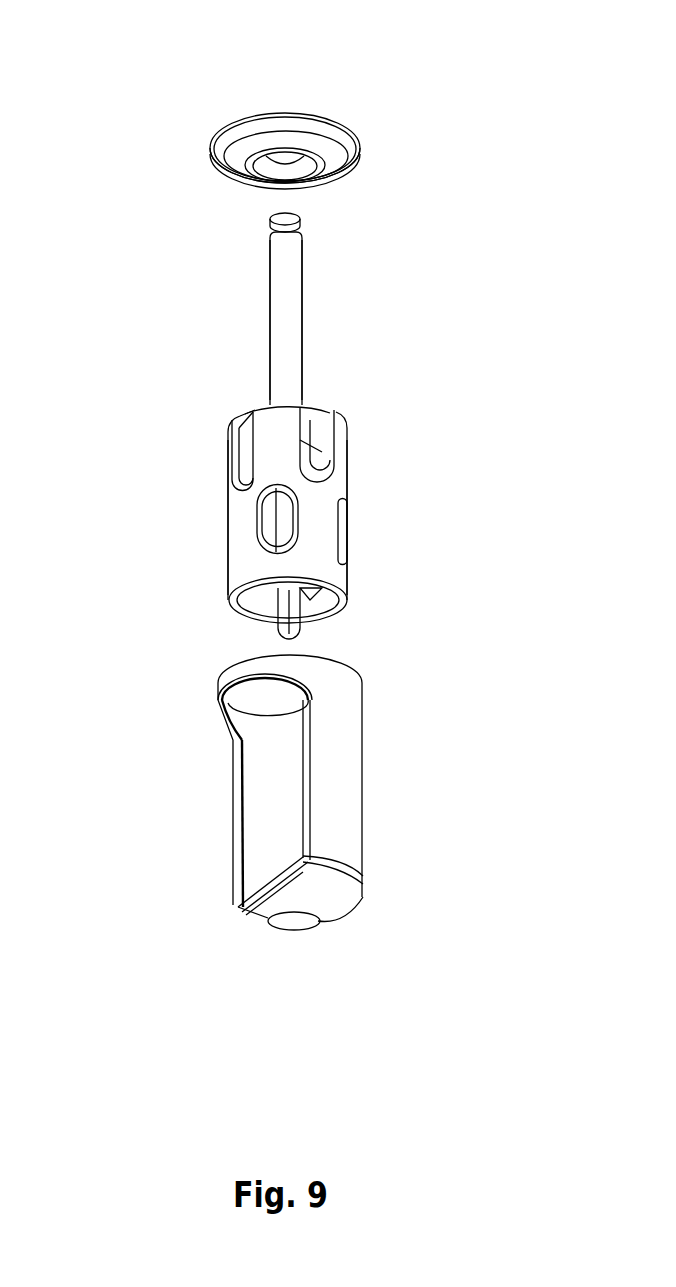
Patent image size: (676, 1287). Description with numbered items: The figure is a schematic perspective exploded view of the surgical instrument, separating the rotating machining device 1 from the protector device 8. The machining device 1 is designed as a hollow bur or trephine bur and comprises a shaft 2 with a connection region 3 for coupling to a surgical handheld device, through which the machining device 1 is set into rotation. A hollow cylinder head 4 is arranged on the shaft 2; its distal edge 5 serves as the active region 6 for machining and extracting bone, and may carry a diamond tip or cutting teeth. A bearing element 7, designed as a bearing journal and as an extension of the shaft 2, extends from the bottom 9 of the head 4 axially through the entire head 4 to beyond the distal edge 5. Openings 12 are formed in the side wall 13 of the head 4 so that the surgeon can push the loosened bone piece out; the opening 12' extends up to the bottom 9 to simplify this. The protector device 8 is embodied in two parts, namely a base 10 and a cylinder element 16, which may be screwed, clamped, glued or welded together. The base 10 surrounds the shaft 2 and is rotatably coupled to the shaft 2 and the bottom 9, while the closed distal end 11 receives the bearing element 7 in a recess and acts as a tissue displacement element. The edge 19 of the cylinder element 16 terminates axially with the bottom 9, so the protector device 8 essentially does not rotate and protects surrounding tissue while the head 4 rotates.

The machining device 1 is at (285, 300).
The shaft 2 is at (283, 342).
The connection region 3 is at (297, 232).
The head 4 is at (337, 482).
The distal edge 5 is at (235, 597).
The active region 6 is at (238, 618).
The bearing element 7 is at (285, 610).
The protector device 8 is at (250, 112).
The bottom 9 is at (312, 404).
The base 10 is at (338, 106).
The distal end 11 is at (323, 900).
The opening 12 is at (380, 538).
The opening 12' is at (206, 439).
The side wall 13 is at (233, 520).
The cylinder element 16 is at (337, 820).
The edge 19 is at (220, 684).